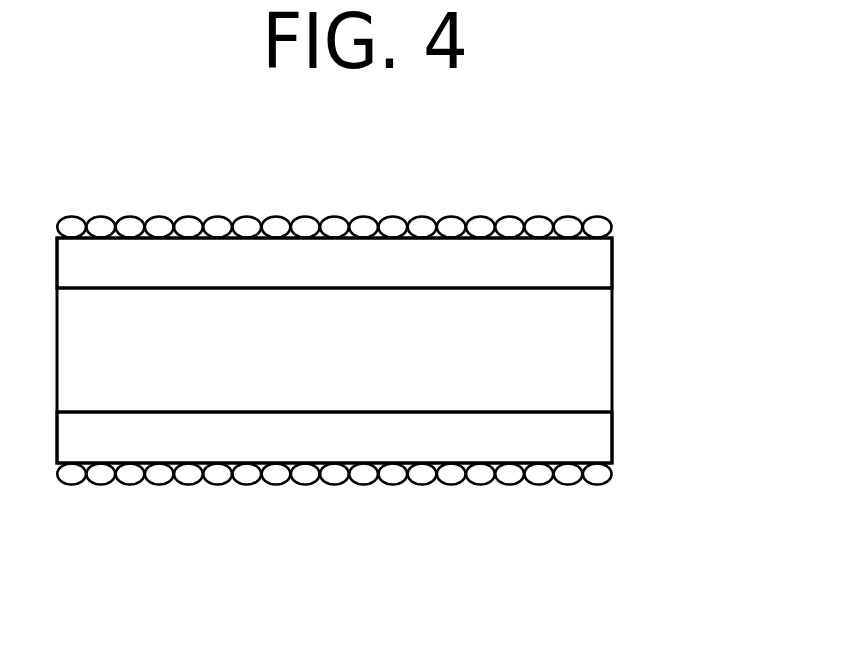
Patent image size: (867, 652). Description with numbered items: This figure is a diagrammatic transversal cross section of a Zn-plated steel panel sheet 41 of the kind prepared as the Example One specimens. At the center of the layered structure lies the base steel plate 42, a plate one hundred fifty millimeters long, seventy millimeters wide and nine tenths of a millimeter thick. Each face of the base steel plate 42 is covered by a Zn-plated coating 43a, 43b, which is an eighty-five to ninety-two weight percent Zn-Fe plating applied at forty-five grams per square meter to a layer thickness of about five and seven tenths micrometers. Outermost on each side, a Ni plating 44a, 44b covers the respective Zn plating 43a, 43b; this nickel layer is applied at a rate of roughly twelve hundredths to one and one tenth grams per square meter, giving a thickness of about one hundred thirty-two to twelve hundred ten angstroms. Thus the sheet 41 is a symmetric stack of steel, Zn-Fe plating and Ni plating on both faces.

The Zn-plated steel panel sheet 41 is at (520, 207).
The base steel plate 42 is at (612, 345).
The Zn-plated coating 43a is at (612, 258).
The Zn-plated coating 43b is at (612, 433).
The Ni plating 44a is at (610, 218).
The Ni plating 44b is at (612, 473).